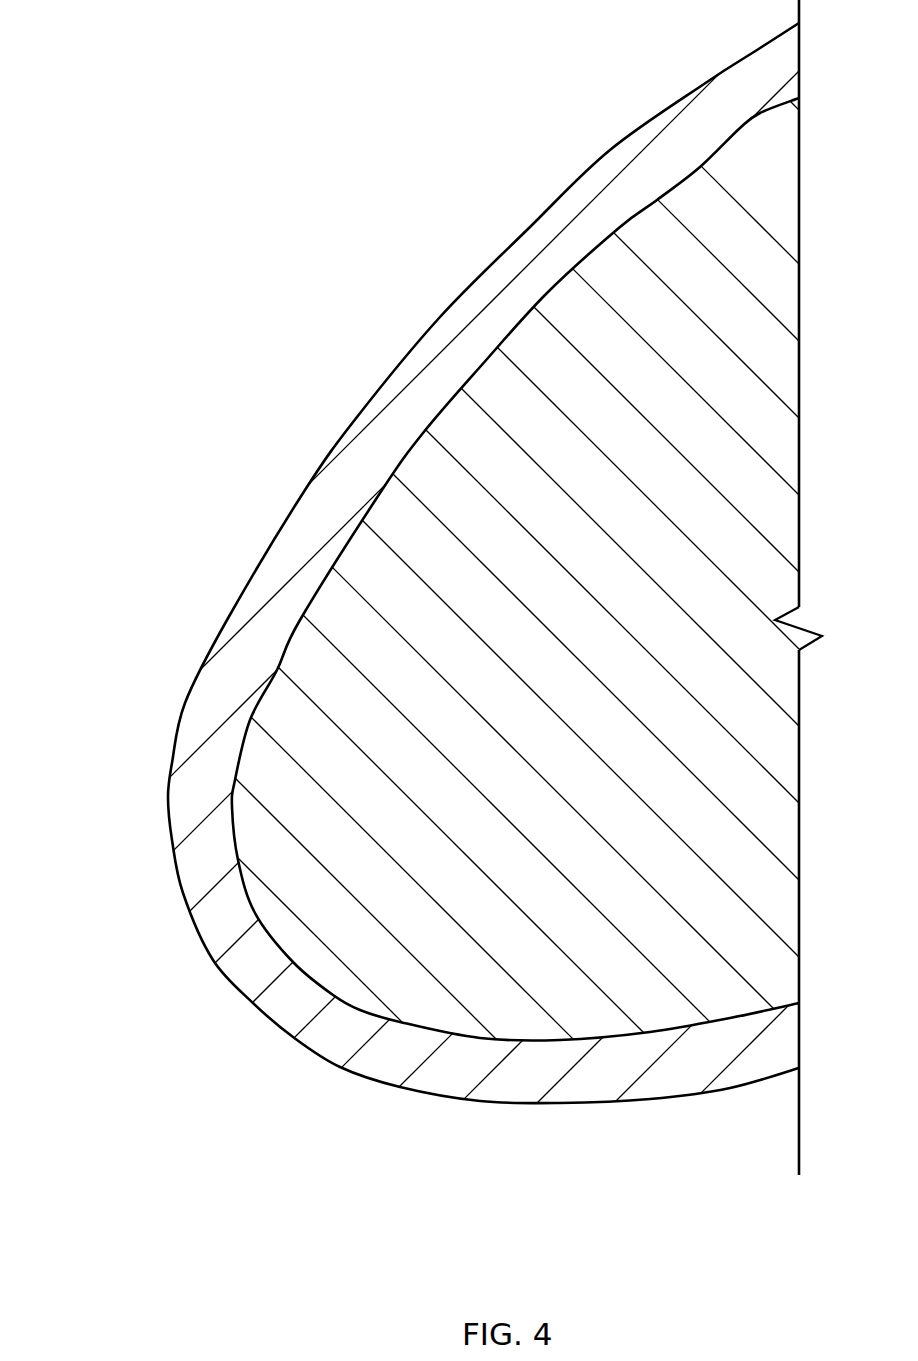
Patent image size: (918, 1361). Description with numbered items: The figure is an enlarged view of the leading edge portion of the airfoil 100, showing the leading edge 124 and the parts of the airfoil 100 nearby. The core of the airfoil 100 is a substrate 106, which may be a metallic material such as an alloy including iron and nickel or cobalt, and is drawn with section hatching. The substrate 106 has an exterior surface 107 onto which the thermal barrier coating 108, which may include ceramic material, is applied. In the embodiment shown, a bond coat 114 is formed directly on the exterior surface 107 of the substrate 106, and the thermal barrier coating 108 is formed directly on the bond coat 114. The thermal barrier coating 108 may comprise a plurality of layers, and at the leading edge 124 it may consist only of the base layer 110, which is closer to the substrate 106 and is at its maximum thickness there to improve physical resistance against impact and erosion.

The airfoil 100 is at (270, 140).
The substrate 106 is at (405, 983).
The exterior surface 107 is at (473, 372).
The thermal barrier coating 108 is at (303, 393).
The base layer 110 is at (280, 1000).
The bond coat 114 is at (538, 1040).
The leading edge 124 is at (182, 892).